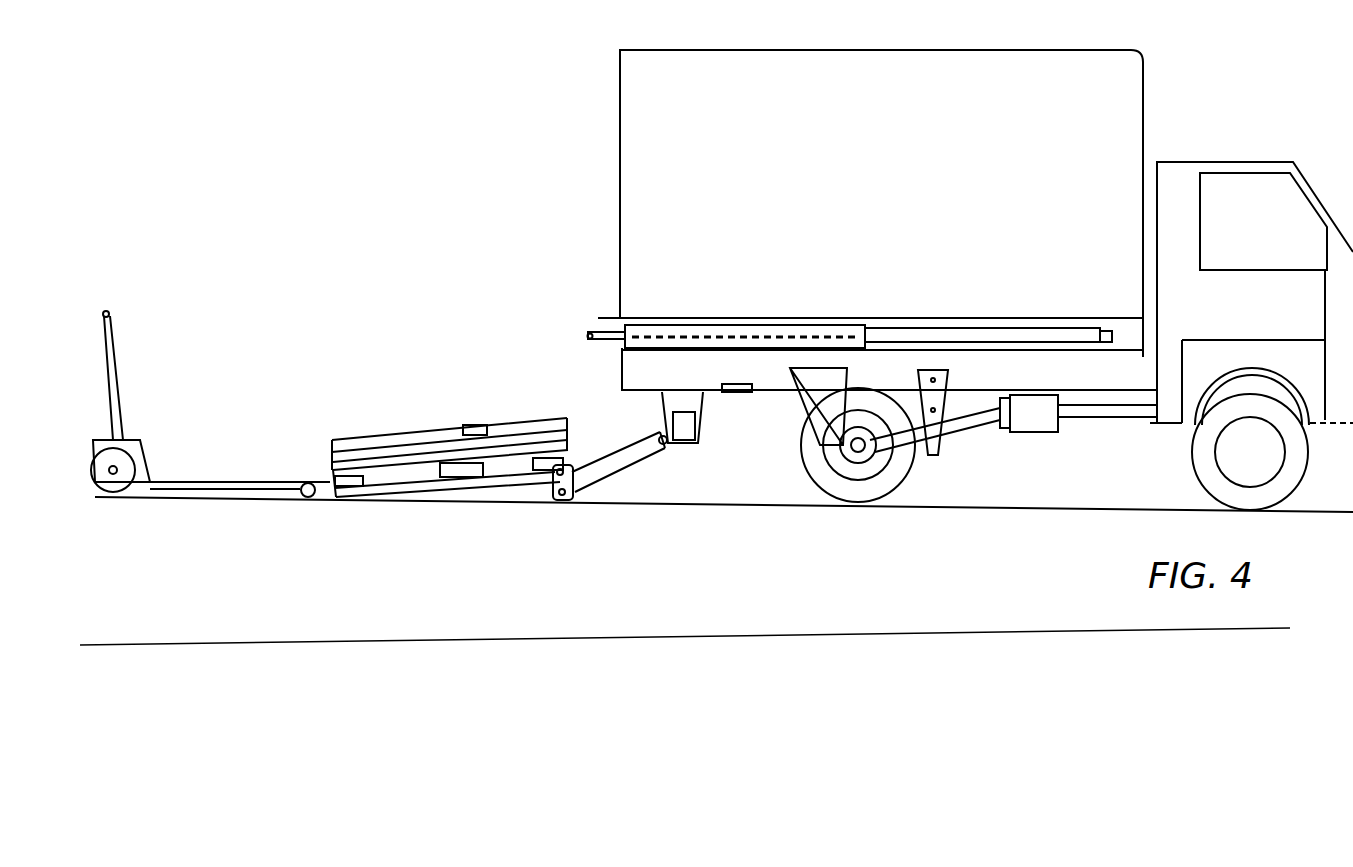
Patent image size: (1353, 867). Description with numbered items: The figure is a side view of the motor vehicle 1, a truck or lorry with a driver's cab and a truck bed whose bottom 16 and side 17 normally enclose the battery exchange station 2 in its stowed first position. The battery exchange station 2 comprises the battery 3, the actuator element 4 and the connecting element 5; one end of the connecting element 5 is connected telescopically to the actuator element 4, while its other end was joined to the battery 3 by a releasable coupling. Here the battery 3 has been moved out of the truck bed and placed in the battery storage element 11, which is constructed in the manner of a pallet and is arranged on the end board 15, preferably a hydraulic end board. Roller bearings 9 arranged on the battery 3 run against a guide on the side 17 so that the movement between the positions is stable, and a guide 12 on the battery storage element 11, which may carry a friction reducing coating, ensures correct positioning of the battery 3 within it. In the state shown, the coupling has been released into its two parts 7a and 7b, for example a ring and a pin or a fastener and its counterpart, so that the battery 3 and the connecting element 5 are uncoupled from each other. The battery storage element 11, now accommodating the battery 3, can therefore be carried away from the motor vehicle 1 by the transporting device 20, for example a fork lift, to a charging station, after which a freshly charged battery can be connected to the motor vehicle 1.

The motor vehicle 1 is at (1258, 124).
The battery exchange station 2 is at (990, 304).
The battery 3 is at (385, 432).
The actuator element 4 is at (1047, 340).
The connecting element 5 is at (795, 326).
The coupling part 7a is at (588, 328).
The coupling part 7b is at (574, 440).
The roller bearings 9 is at (445, 445).
The battery storage element 11 is at (318, 460).
The guide 12 is at (400, 450).
The end board 15 is at (533, 482).
The bottom 16 is at (1072, 325).
The side 17 is at (737, 376).
The transporting device 20 is at (153, 396).